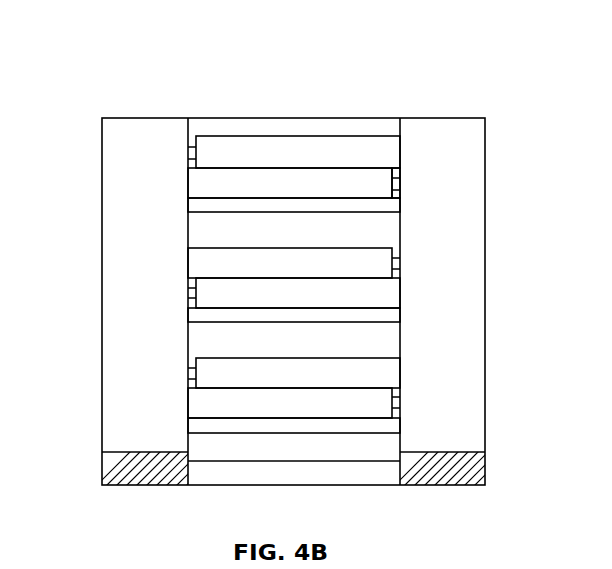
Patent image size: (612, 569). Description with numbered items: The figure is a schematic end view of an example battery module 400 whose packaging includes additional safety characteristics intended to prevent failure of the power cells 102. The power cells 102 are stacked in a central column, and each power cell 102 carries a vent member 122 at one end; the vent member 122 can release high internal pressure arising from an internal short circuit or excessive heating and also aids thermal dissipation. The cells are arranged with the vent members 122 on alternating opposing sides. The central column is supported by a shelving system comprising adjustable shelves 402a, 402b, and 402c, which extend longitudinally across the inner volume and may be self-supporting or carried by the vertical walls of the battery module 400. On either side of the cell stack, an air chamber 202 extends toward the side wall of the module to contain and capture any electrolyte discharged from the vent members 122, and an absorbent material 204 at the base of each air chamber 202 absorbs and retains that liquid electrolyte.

The battery module 400 is at (127, 70).
The power cell 102 is at (307, 137).
The vent member 122 is at (400, 183).
The air chamber 202 is at (475, 229).
The absorbent material 204 is at (433, 477).
The adjustable shelf 402a is at (197, 205).
The adjustable shelf 402b is at (197, 316).
The adjustable shelf 402c is at (197, 425).